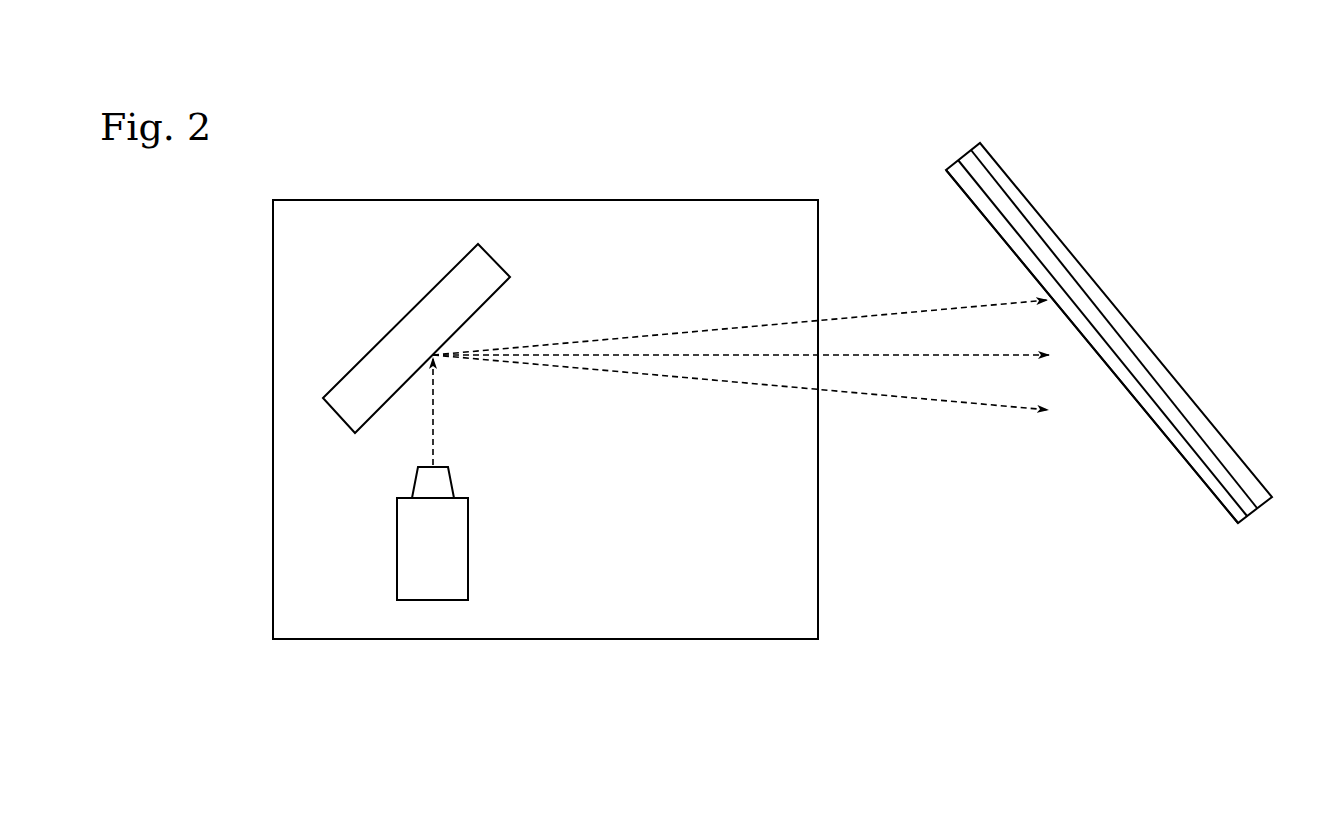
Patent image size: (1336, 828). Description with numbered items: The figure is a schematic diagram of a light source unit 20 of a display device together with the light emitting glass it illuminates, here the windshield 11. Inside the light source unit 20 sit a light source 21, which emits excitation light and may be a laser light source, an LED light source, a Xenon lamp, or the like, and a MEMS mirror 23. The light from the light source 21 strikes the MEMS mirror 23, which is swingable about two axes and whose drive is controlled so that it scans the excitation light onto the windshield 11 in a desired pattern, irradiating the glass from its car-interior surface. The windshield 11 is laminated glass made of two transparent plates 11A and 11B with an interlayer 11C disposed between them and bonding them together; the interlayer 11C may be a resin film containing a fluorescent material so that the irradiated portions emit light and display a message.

The light source unit 20 is at (624, 200).
The light source 21 is at (468, 550).
The MEMS mirror 23 is at (399, 319).
The windshield 11 is at (1114, 312).
The transparent plate 11A is at (1141, 397).
The transparent plate 11B is at (1148, 361).
The interlayer 11C is at (1232, 486).